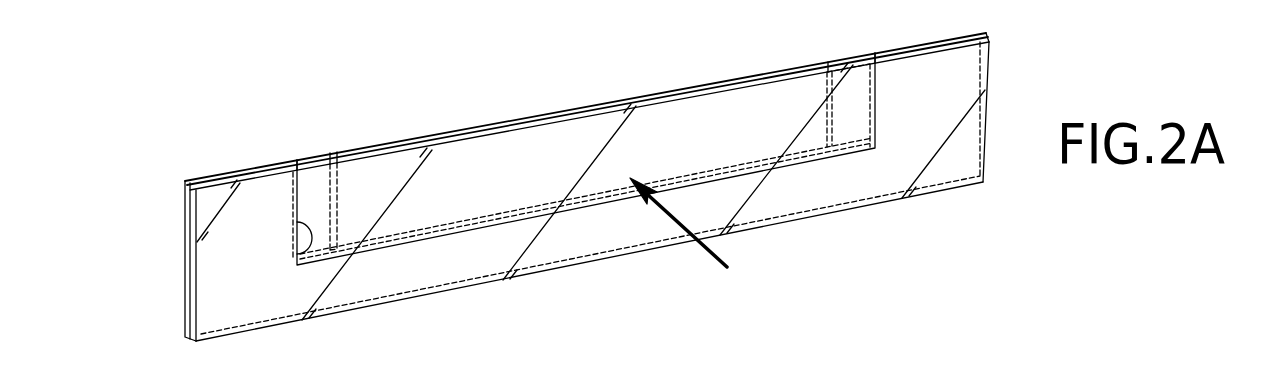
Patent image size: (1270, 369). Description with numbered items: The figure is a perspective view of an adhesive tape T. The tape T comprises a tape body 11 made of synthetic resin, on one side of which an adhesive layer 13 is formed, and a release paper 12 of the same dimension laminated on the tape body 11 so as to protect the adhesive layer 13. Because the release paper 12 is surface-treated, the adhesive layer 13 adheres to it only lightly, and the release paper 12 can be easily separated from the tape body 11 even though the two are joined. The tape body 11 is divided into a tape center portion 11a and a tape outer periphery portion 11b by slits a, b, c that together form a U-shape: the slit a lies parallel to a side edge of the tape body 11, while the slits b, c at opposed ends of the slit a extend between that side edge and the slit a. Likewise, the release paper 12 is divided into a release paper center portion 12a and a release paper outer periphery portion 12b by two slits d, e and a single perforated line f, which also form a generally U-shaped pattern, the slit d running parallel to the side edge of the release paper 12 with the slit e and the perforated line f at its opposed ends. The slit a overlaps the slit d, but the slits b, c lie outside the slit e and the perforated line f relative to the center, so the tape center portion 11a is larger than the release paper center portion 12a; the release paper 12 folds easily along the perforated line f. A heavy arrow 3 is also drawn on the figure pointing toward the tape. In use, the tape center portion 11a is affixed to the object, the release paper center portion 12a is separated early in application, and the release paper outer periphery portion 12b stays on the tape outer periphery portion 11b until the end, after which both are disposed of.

The adhesive tape T is at (535, 179).
The release paper 12 is at (183, 228).
The release paper center portion 12a is at (597, 102).
The release paper outer periphery portion 12b is at (255, 167).
The adhesive layer 13 is at (467, 133).
The tape body 11 is at (528, 282).
The tape center portion 11a is at (690, 125).
The tape outer periphery portion 11b is at (806, 196).
The insertion direction arrow 3 is at (695, 245).
The slit a is at (443, 237).
The slit b is at (876, 100).
The slit c is at (294, 256).
The slit d is at (547, 205).
The slit e is at (827, 108).
The perforated line f is at (340, 208).